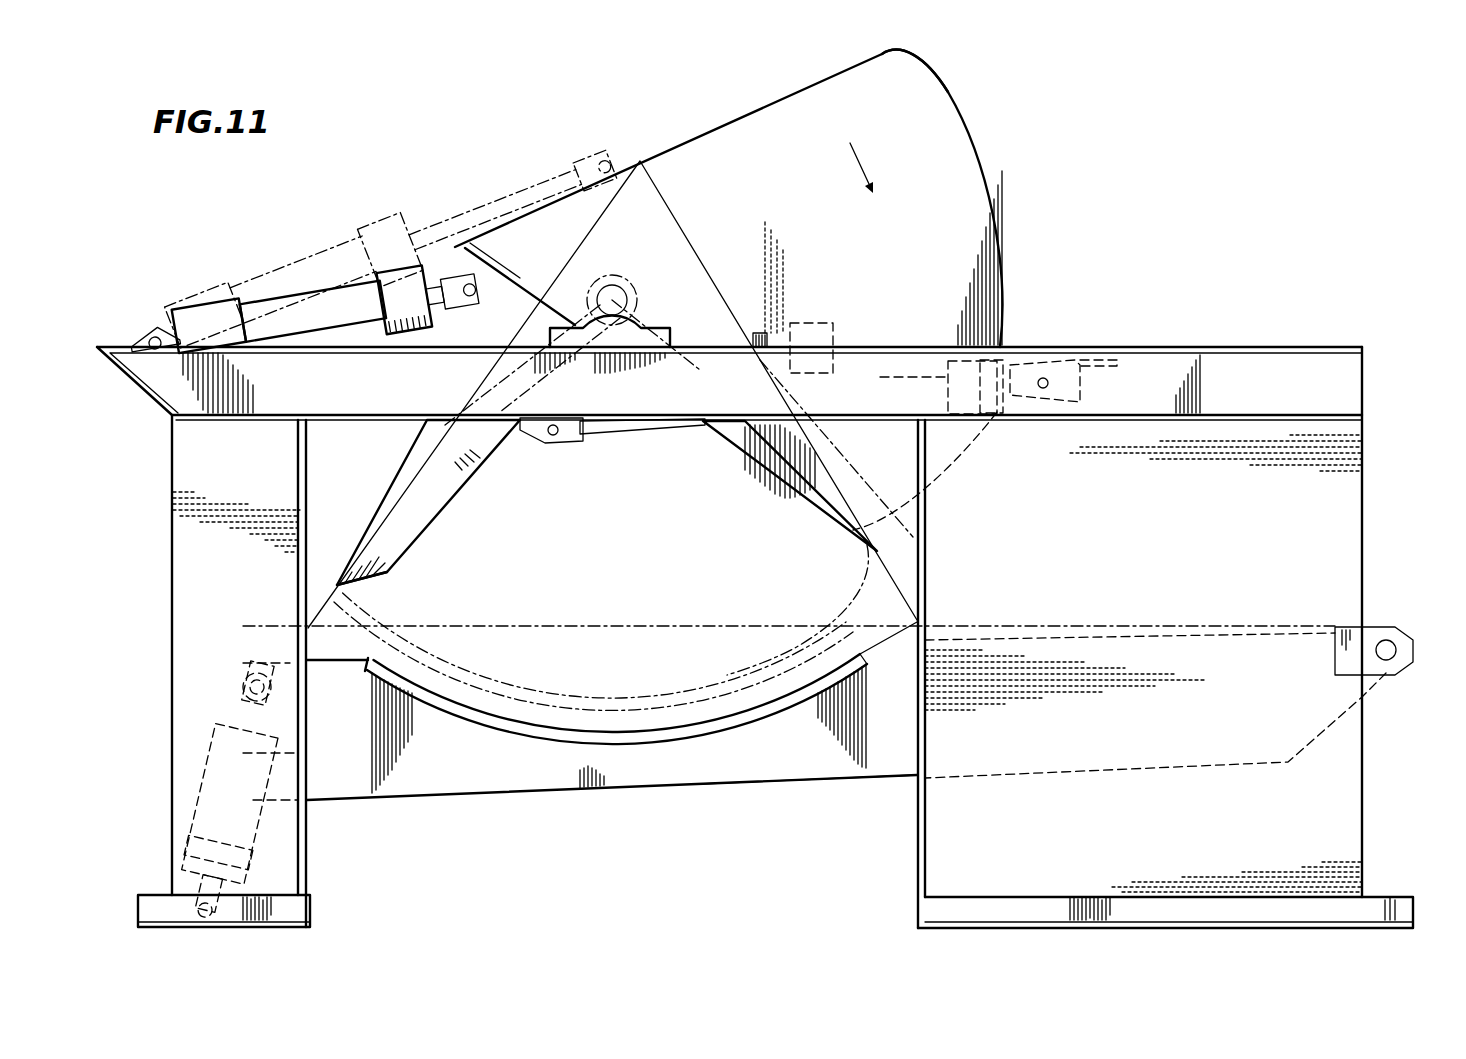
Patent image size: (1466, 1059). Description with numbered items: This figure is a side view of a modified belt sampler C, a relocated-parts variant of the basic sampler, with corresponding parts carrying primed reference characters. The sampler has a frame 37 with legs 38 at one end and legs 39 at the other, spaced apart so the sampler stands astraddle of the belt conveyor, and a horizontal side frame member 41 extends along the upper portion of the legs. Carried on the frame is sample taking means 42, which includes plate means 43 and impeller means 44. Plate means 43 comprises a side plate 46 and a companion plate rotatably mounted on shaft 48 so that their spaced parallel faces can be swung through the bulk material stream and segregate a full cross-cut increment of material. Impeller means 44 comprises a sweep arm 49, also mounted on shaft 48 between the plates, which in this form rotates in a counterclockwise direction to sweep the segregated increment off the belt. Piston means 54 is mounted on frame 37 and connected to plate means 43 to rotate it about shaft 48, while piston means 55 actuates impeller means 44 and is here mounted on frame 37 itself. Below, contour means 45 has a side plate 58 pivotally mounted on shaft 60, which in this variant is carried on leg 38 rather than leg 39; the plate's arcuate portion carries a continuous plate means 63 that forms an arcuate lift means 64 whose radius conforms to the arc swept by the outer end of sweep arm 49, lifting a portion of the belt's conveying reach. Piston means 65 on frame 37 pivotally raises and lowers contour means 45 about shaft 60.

The frame 37 is at (1372, 393).
The legs 38 is at (1350, 517).
The legs 39 is at (183, 482).
The horizontal side frame member 41 is at (1200, 352).
The sample taking means 42 is at (1010, 181).
The plate means 43 is at (1008, 239).
The impeller means 44 is at (412, 560).
The contour means 45 is at (558, 800).
The side plate 46 is at (944, 118).
The shaft 48 is at (616, 294).
The sweep arm 49 is at (495, 491).
The piston means 54 is at (372, 225).
The piston means 55 is at (850, 281).
The side plate 58 is at (730, 773).
The shaft 60 is at (1432, 604).
The support plate means 63 is at (747, 670).
The lift means 64 is at (540, 716).
The piston means 65 is at (197, 820).
The belt sampler C is at (1186, 284).